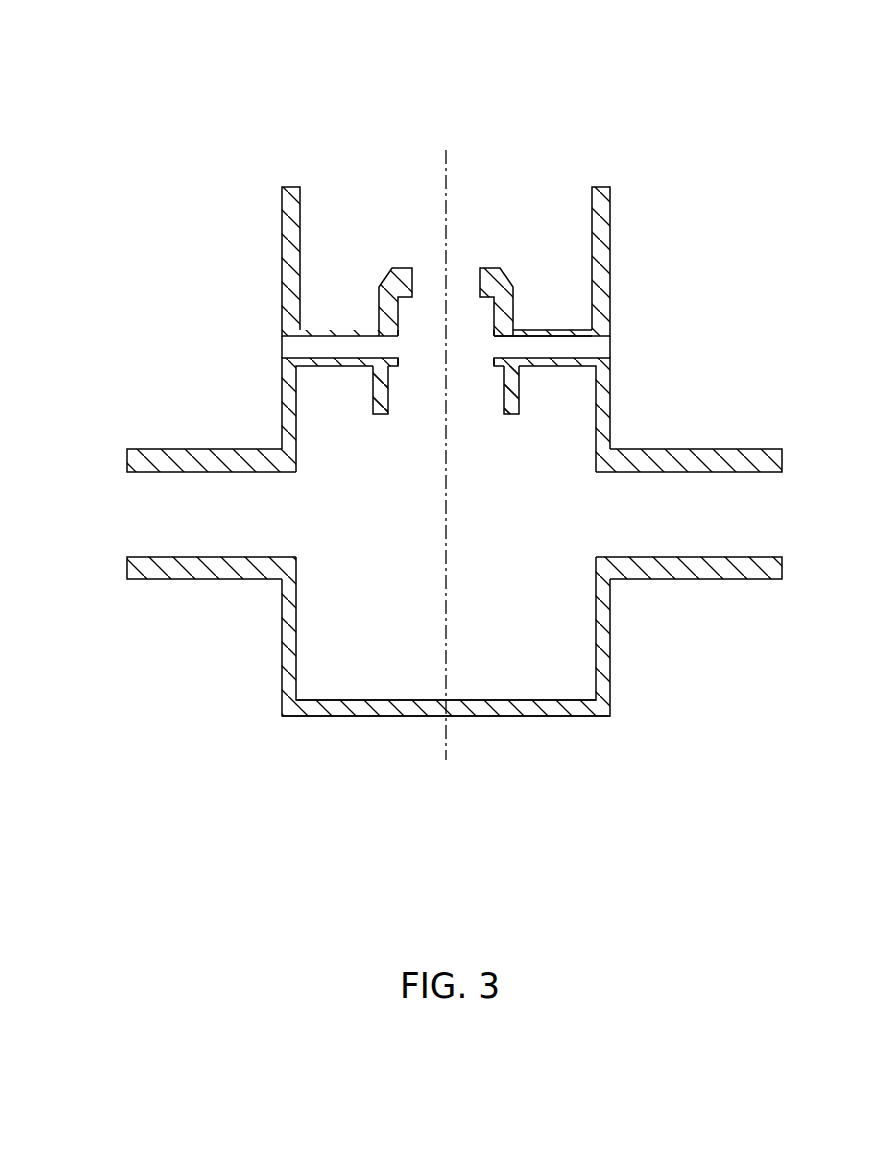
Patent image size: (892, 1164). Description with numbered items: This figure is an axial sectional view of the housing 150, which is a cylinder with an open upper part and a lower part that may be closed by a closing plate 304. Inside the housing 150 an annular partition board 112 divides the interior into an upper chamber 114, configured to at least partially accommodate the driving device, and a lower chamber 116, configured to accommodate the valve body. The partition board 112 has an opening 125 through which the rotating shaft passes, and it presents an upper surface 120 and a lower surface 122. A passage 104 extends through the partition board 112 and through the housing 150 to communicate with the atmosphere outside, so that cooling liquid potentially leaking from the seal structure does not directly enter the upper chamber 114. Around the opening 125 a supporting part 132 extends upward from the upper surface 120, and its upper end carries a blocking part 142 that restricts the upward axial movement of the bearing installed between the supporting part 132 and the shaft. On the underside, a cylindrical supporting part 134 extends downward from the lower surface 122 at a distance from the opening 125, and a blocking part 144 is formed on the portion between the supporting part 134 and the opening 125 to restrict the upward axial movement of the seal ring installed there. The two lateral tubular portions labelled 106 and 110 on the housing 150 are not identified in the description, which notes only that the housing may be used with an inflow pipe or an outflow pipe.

The housing 150 is at (742, 88).
The upper chamber 114 is at (552, 210).
The supporting part 132 is at (380, 285).
The blocking part 142 is at (483, 270).
The opening 125 is at (427, 335).
The upper surface 120 is at (548, 333).
The partition board 112 is at (283, 342).
The passage 104 is at (608, 343).
The lower chamber 116 is at (408, 672).
The closing plate 304 is at (565, 707).
The supporting part 134 is at (385, 412).
The lower surface 122 is at (572, 365).
The blocking part 144 is at (398, 365).
The inlet port 106 is at (127, 450).
The outlet port 110 is at (698, 448).